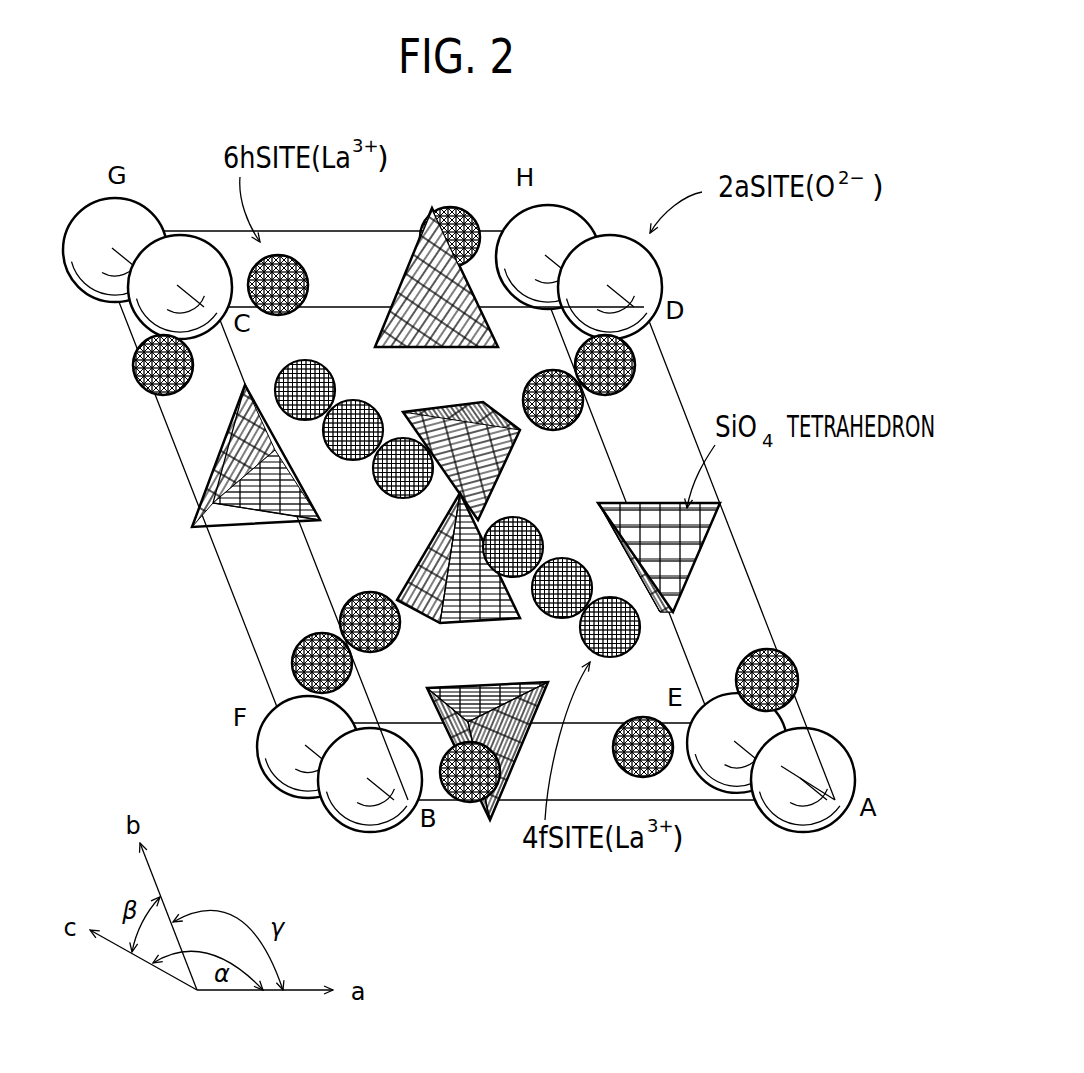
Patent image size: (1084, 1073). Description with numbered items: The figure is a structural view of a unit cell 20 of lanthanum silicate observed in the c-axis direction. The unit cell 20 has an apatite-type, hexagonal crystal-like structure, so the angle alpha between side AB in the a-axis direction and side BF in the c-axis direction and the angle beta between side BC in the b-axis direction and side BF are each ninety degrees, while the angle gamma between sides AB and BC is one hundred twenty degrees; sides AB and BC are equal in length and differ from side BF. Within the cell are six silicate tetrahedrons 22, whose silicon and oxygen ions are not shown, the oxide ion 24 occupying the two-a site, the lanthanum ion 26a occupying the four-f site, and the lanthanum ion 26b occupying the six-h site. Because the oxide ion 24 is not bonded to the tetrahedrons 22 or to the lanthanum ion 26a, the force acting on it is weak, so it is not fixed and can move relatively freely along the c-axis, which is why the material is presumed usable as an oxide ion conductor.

The unit cell 20 is at (668, 117).
The SiO4 tetrahedron 22 is at (420, 260).
The O2- occupying the 2a site 24 is at (90, 232).
The La3+ occupying the 4f site 26a is at (353, 413).
The La3+ occupying the 6h site 26b is at (135, 360).